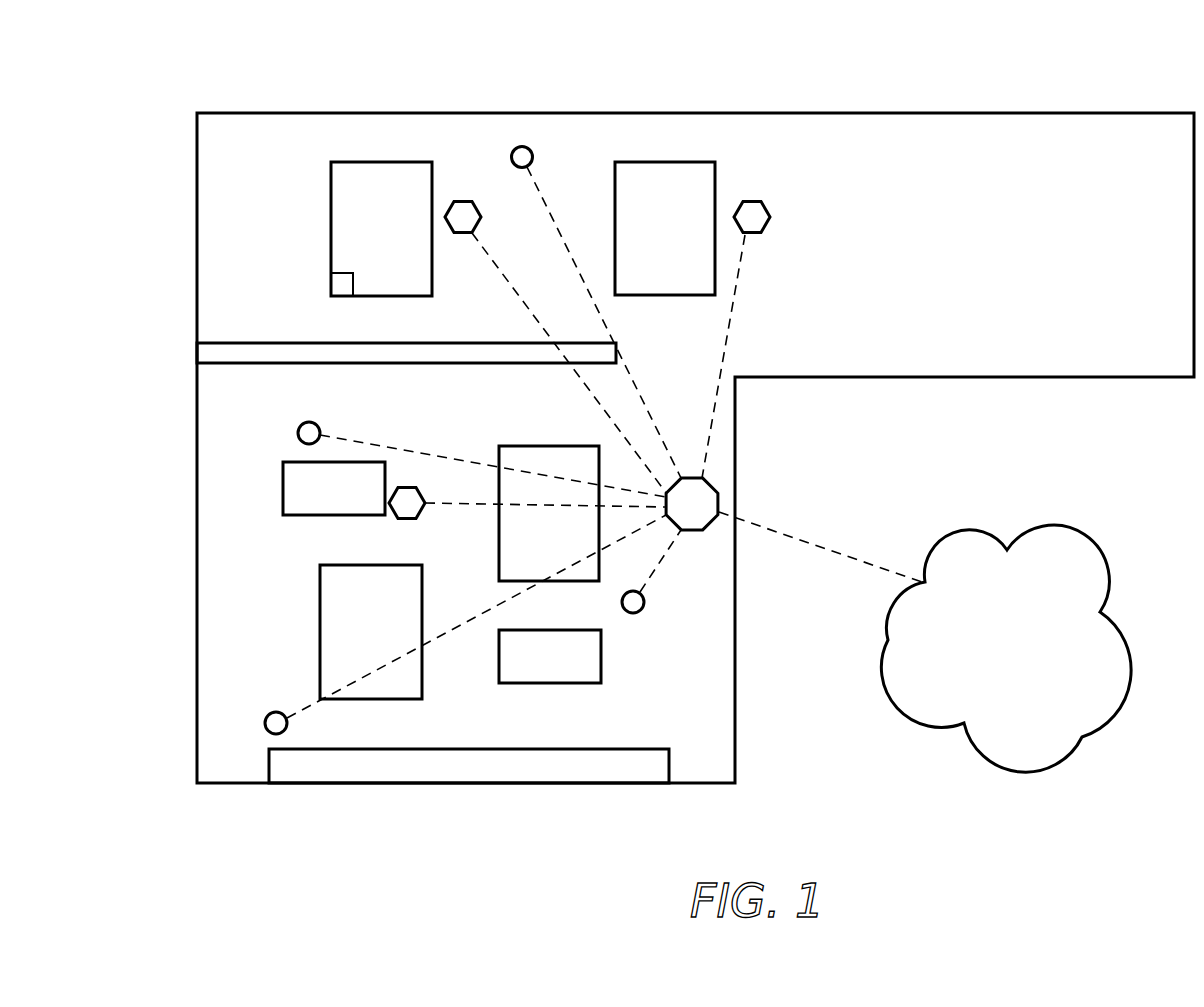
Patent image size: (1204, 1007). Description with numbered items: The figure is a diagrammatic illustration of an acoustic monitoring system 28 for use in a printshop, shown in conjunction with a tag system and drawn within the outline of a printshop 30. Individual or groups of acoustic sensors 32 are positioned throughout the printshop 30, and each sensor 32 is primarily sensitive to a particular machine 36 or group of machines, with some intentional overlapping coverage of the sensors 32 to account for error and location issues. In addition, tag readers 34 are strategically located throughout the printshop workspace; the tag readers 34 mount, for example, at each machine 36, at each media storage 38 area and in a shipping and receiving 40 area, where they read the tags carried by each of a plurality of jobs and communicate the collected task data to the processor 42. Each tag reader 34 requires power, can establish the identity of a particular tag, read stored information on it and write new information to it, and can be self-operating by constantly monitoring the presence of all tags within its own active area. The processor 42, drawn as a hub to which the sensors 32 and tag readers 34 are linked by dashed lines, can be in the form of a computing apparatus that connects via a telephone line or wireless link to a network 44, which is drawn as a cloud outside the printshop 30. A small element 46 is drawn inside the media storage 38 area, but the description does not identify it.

The acoustic monitoring system 28 is at (758, 546).
The printshop 30 is at (386, 85).
The acoustic sensor 32 is at (533, 156).
The tag reader 34 is at (464, 200).
The machine 36 is at (715, 178).
The media storage area 38 is at (331, 187).
The shipping and receiving area 40 is at (405, 786).
The processor 42 is at (700, 500).
The network 44 is at (1030, 572).
The embedded module 46 is at (309, 269).